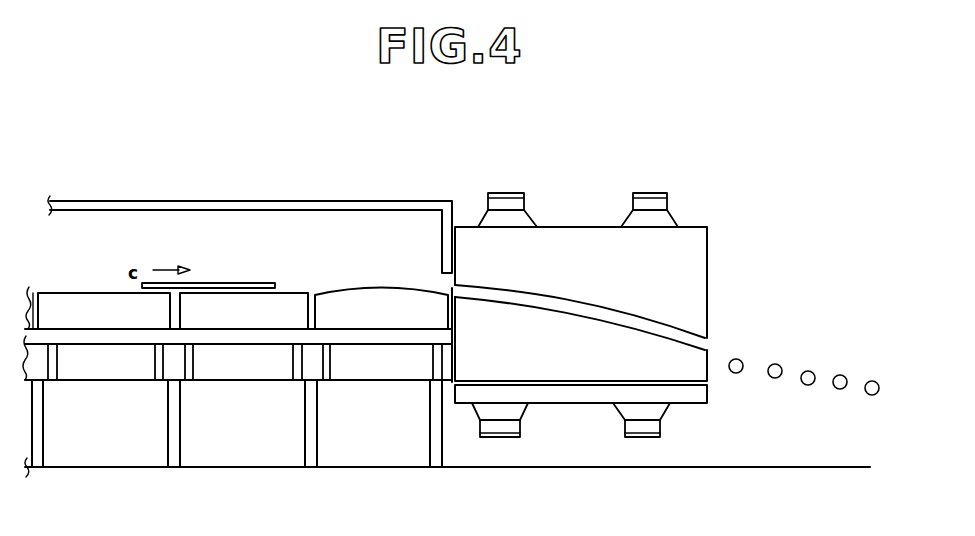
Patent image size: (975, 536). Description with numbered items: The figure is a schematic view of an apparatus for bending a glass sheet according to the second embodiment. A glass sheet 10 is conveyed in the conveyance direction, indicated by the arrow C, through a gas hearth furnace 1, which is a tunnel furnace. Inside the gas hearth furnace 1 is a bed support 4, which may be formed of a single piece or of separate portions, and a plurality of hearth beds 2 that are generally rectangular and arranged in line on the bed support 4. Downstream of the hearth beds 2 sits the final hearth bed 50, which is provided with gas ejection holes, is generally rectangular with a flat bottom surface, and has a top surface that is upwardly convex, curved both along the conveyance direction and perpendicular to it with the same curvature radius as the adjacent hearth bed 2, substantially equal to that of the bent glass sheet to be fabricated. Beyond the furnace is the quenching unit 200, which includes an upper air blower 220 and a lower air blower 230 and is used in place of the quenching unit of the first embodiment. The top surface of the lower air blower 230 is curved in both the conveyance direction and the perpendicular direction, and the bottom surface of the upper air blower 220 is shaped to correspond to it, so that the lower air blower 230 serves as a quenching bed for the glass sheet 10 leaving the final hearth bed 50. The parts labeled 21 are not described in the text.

The gas hearth furnace 1 is at (153, 183).
The hearth beds 2 is at (125, 322).
The bed support 4 is at (403, 338).
The glass sheet 10 is at (220, 285).
The support nozzles 21 is at (522, 219).
The final hearth bed 50 is at (407, 308).
The quenching unit 200 is at (612, 178).
The upper air blower 220 is at (683, 277).
The lower air blower 230 is at (688, 364).